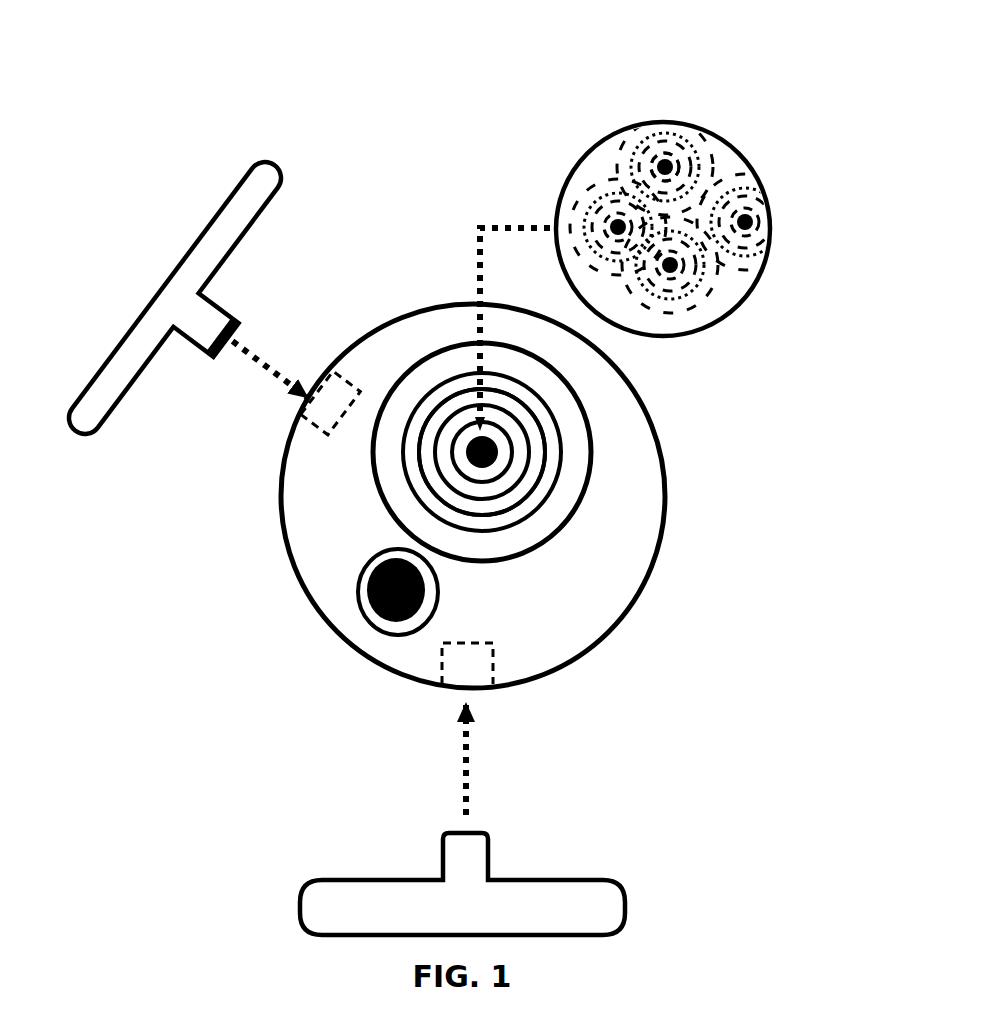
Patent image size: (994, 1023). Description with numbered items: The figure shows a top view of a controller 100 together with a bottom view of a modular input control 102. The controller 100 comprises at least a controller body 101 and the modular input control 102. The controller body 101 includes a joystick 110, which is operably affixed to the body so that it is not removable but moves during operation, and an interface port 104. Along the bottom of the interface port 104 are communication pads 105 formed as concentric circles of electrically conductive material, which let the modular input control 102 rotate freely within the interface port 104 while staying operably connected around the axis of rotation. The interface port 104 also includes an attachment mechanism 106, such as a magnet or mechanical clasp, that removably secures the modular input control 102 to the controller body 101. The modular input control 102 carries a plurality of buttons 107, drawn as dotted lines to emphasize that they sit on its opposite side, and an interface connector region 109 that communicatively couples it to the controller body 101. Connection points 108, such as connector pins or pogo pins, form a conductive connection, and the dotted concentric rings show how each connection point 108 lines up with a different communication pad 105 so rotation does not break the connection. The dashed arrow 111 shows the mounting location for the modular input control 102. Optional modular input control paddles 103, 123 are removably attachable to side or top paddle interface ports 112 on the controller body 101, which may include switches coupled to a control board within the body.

The controller 100 is at (334, 76).
The controller body 101 is at (398, 313).
The modular input control 102 is at (668, 122).
The modular input control paddle 103 is at (338, 878).
The interface port 104 is at (552, 368).
The communication pads 105 is at (447, 441).
The attachment mechanism 106 is at (472, 437).
The buttons 107 is at (640, 142).
The connection points 108 is at (738, 210).
The interface connector region 109 is at (703, 158).
The joystick 110 is at (378, 554).
The dashed arrow 111 is at (505, 226).
The paddle interface ports 112 is at (348, 378).
The modular input control paddle 123 is at (260, 160).